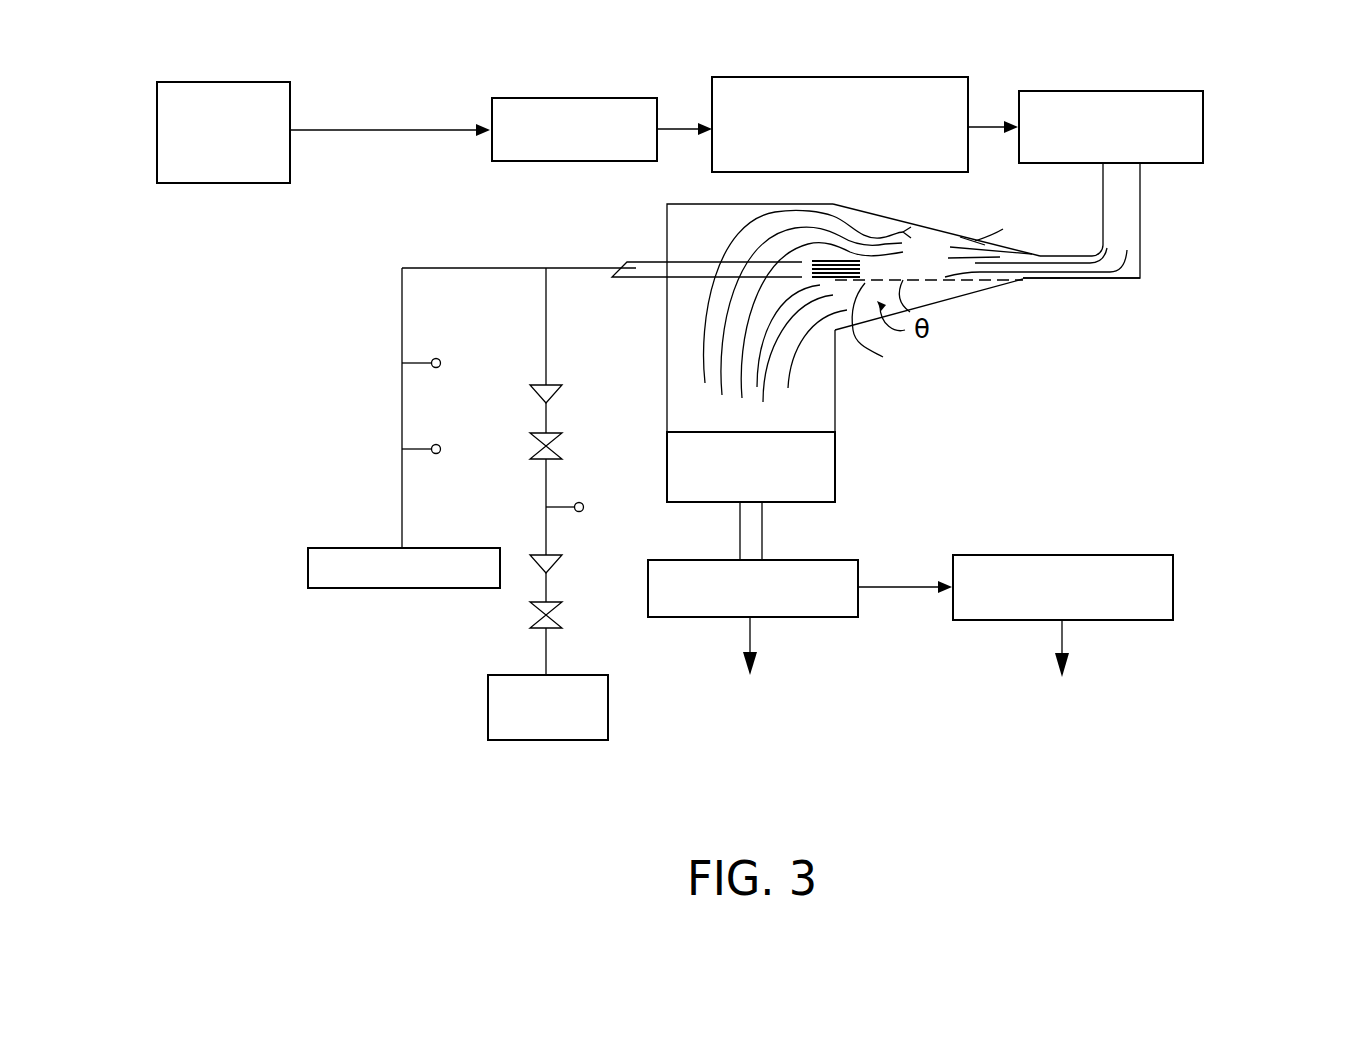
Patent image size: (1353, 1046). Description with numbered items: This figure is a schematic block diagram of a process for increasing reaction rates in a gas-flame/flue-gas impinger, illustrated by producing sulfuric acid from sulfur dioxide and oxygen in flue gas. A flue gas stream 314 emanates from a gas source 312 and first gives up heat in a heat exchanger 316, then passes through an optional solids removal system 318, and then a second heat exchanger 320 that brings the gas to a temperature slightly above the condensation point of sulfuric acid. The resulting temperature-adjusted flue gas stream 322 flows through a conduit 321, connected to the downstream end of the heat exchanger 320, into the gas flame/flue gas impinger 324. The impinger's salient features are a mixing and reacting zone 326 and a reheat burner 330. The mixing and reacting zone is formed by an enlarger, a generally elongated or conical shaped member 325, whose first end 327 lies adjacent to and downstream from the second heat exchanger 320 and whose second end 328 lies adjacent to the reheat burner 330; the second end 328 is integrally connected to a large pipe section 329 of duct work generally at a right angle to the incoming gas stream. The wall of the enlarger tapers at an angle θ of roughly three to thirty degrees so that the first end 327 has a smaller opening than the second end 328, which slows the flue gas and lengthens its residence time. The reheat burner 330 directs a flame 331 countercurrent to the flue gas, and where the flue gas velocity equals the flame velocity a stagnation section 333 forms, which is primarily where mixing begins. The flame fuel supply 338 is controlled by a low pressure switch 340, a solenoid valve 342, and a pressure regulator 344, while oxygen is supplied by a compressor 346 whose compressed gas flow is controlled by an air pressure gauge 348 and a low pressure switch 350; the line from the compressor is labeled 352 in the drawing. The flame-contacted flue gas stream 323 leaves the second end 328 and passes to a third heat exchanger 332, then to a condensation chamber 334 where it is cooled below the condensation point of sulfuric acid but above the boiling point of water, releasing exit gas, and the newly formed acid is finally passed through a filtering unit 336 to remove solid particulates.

The gas source 312 is at (243, 82).
The flue gas stream 314 is at (427, 132).
The heat exchanger 316 is at (628, 98).
The solids removal system 318 is at (873, 76).
The second heat exchanger 320 is at (1127, 91).
The conduit 321 is at (1113, 280).
The temperature-adjusted flue gas stream 322 is at (1140, 266).
The flame-contacted flue gas stream 323 is at (748, 373).
The gas flame/flue gas impinger 324 is at (935, 308).
The generally elongated or conical shaped member 325 is at (975, 292).
The mixing and reacting zone 326 is at (902, 253).
The first end 327 is at (1060, 280).
The second end 328 is at (855, 208).
The large pipe section 329 is at (667, 225).
The reheat burner 330 is at (748, 270).
The flame 331 is at (892, 328).
The third heat exchanger 332 is at (810, 455).
The stagnation section 333 is at (993, 242).
The condensation chamber 334 is at (810, 560).
The filtering unit 336 is at (1173, 578).
The flame fuel supply 338 is at (608, 692).
The low pressure switch 340 is at (594, 508).
The solenoid valve 342 is at (562, 447).
The pressure regulator 344 is at (562, 387).
The compressor 346 is at (407, 588).
The air pressure gauge 348 is at (449, 450).
The low pressure switch 350 is at (449, 364).
The compressed air line 352 is at (410, 270).